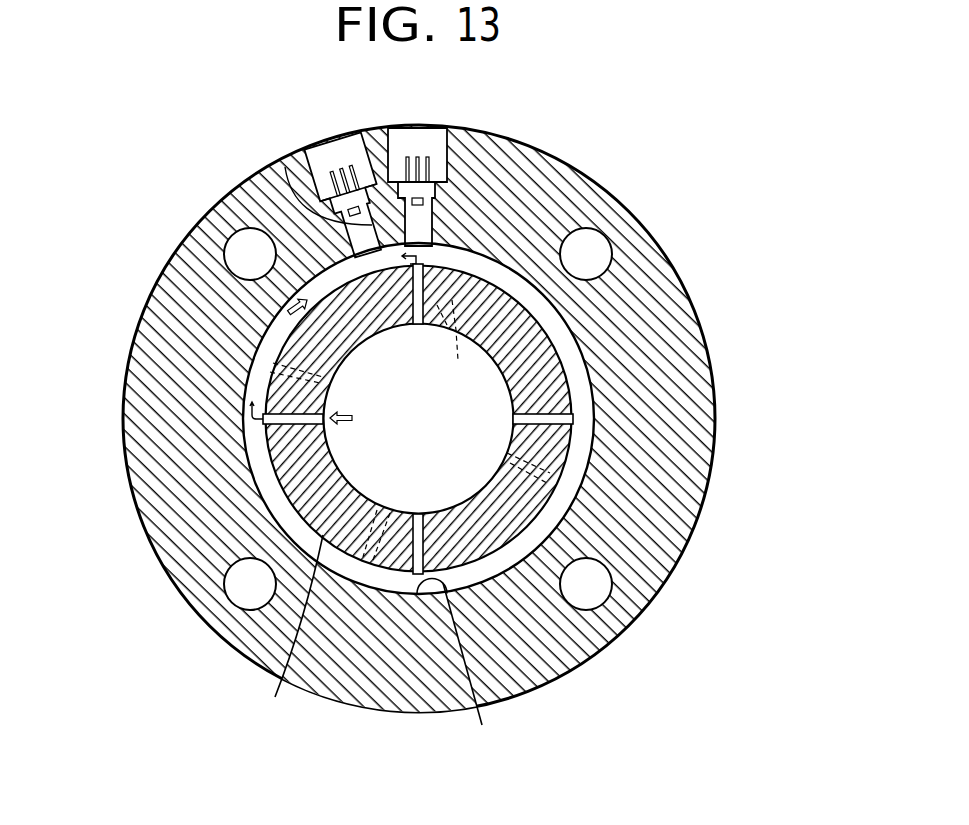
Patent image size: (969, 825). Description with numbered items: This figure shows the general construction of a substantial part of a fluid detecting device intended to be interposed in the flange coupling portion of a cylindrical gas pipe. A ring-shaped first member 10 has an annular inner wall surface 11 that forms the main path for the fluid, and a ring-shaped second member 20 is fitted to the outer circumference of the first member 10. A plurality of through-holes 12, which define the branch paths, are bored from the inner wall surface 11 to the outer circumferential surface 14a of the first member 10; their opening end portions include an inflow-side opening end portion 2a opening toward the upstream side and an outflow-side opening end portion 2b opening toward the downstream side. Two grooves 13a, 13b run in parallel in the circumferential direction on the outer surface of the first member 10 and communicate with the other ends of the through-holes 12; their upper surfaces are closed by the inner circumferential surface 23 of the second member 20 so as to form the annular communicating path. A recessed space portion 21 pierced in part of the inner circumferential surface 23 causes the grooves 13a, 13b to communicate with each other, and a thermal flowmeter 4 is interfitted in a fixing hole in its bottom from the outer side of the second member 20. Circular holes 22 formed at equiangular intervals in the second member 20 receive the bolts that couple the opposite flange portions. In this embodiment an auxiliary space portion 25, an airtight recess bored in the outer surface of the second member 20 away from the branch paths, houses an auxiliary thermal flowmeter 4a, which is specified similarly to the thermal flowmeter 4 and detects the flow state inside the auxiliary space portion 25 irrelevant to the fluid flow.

The inflow-side opening end portion 2a is at (410, 325).
The outflow-side opening end portion 2b is at (450, 300).
The thermal flowmeter 4 is at (448, 190).
The auxiliary thermal flowmeter 4a is at (300, 162).
The first member 10 is at (533, 348).
The inner wall surface 11 is at (502, 385).
The through-holes 12 is at (462, 280).
The groove 13a is at (552, 629).
The groove 13b is at (552, 514).
The outer circumferential surface 14a is at (280, 634).
The second member 20 is at (661, 430).
The space portion 21 is at (470, 254).
The circular holes 22 is at (590, 250).
The inner circumferential surface 23 is at (467, 665).
The auxiliary space portion 25 is at (310, 215).